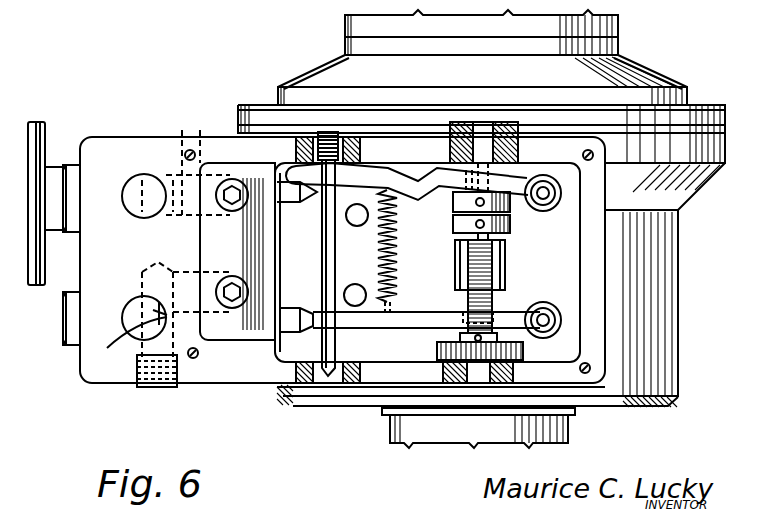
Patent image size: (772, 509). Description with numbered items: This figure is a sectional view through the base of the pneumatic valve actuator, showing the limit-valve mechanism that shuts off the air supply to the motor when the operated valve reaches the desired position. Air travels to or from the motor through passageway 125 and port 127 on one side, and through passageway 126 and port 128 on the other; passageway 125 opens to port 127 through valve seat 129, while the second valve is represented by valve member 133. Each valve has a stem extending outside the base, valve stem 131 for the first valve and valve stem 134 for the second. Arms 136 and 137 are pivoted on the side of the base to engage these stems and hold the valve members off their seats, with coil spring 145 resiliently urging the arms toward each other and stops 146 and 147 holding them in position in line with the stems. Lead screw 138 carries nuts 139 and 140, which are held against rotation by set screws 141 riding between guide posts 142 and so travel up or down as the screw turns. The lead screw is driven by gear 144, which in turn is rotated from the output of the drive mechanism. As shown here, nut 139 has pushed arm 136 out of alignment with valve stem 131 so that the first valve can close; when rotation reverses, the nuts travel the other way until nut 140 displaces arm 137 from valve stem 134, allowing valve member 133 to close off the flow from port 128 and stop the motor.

The passageway 125 is at (186, 130).
The passageway 126 is at (137, 283).
The port 127 is at (135, 175).
The port 128 is at (125, 302).
The valve seat 129 is at (418, 27).
The valve stem 131 is at (292, 198).
The valve member 133 is at (129, 336).
The valve stem 134 is at (300, 310).
The arm 136 is at (407, 190).
The arm 137 is at (412, 312).
The lead screw 138 is at (497, 305).
The nut 139 is at (510, 208).
The nut 140 is at (508, 227).
The set screw 141 is at (453, 204).
The guide post 142 is at (502, 261).
The gear 144 is at (437, 350).
The coil spring 145 is at (378, 249).
The stop 146 is at (355, 227).
The stop 147 is at (352, 284).